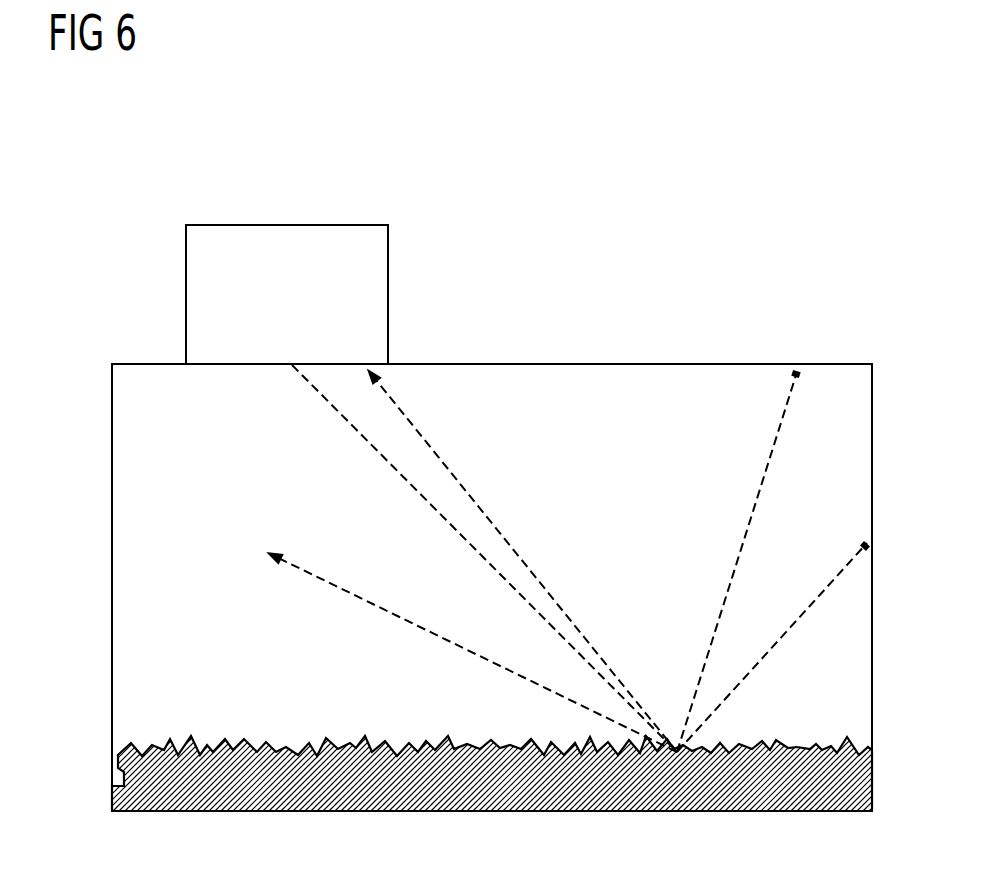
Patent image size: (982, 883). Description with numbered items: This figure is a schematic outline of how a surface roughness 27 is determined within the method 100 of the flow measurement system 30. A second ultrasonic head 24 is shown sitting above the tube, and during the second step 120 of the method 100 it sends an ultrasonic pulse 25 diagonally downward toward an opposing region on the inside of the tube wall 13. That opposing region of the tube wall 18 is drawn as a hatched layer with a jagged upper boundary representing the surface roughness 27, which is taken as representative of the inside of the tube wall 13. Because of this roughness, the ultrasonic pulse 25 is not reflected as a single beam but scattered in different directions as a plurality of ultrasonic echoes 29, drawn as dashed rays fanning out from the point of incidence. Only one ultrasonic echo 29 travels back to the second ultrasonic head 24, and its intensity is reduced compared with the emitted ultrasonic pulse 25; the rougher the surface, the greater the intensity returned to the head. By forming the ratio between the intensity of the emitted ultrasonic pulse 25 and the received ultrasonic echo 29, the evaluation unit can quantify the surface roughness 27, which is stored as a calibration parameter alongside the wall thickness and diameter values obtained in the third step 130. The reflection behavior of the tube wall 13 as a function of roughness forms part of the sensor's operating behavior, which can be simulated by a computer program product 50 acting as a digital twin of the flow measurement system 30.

The flow measurement system 30 is at (495, 506).
The computer program product 50 is at (495, 506).
The method 100 is at (197, 171).
The second ultrasonic head 24 is at (374, 259).
The ultrasonic pulse 25 is at (456, 558).
The third step 130 is at (357, 433).
The ultrasonic echo 29 is at (343, 588).
The second step 120 is at (453, 475).
The surface roughness 27 is at (215, 745).
The tube wall 18 is at (172, 800).
The tube wall 13 is at (810, 800).